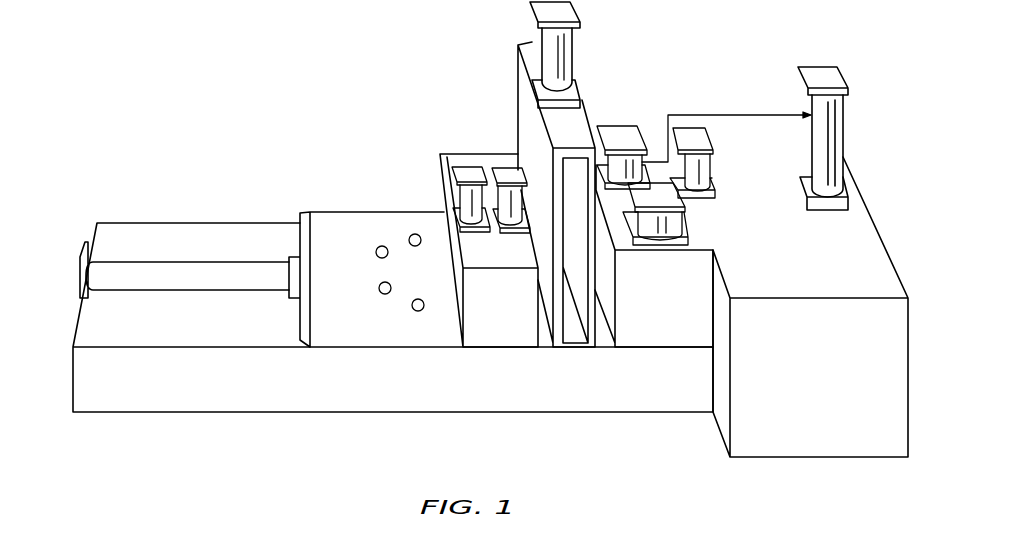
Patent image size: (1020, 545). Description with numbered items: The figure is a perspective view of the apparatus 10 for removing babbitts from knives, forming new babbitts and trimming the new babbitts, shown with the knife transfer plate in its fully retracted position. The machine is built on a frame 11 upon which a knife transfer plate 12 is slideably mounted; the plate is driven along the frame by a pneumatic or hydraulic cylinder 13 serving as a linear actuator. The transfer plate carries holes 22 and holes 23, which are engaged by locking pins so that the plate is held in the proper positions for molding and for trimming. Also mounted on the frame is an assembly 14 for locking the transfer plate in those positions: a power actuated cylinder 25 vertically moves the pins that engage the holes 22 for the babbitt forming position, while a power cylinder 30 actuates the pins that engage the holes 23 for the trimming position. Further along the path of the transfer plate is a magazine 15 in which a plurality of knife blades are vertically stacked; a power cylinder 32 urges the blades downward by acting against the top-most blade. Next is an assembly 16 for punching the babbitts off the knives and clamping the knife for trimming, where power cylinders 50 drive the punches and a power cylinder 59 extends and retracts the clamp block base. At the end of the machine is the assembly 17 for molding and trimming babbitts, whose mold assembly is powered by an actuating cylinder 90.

The apparatus 10 is at (388, 173).
The frame 11 is at (73, 370).
The knife transfer plate 12 is at (337, 320).
The cylinder 13 is at (174, 275).
The locking assembly 14 is at (511, 309).
The magazine 15 is at (518, 45).
The punching and clamping assembly 16 is at (668, 314).
The molding and trimming assembly 17 is at (828, 392).
The holes 22 is at (385, 295).
The holes 23 is at (420, 312).
The power actuated cylinder 25 is at (467, 170).
The power cylinder 30 is at (506, 170).
The power cylinder 32 is at (565, 62).
The power cylinders 50 is at (617, 132).
The power cylinder 59 is at (690, 137).
The actuating cylinder 90 is at (840, 123).